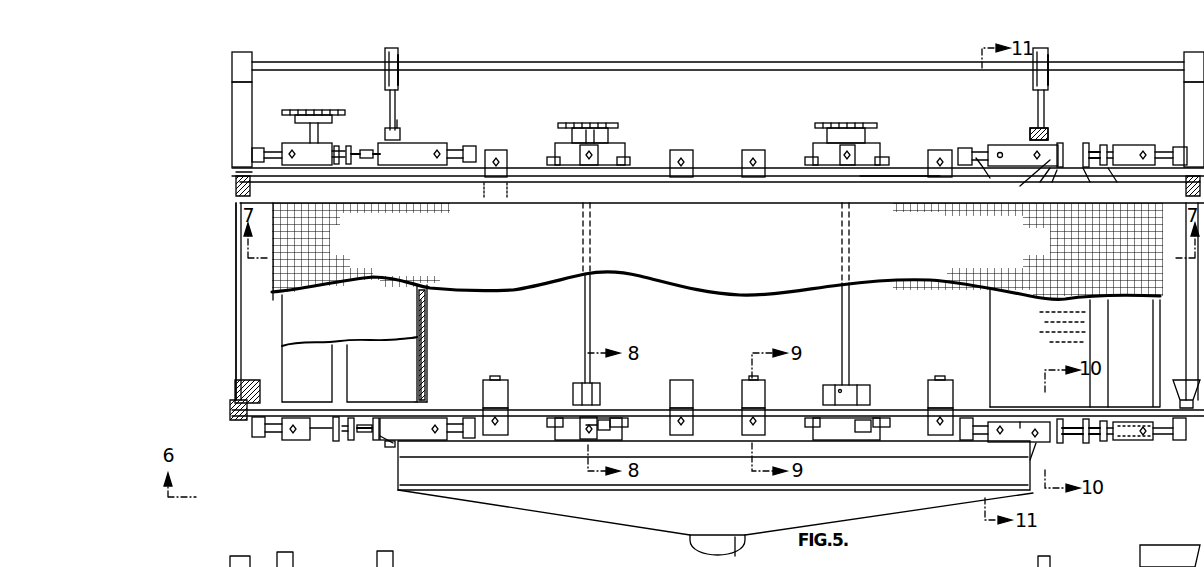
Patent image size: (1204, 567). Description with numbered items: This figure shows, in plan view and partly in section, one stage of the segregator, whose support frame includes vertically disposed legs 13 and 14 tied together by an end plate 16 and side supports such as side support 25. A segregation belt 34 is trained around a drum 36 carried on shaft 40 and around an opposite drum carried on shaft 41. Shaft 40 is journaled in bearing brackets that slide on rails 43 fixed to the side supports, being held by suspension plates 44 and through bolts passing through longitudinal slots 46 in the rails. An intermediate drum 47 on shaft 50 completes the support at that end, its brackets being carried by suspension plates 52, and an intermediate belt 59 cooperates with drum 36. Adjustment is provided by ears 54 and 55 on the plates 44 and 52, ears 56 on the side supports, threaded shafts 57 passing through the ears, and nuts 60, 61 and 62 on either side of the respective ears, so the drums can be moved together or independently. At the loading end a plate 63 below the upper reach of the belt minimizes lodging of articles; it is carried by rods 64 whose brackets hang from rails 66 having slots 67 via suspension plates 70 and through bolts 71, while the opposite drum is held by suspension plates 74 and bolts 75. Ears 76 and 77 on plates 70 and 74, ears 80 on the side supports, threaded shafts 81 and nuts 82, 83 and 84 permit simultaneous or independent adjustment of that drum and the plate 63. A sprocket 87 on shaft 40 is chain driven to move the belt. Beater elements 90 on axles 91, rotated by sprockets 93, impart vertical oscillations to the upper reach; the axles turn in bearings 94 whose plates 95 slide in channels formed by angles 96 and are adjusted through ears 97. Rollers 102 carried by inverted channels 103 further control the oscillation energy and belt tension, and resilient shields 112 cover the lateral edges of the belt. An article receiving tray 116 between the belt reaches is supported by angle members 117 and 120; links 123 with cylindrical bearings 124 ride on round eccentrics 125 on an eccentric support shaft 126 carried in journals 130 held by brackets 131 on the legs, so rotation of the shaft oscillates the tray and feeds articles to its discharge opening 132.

The leg 13 is at (232, 408).
The leg 14 is at (234, 174).
The end plate 16 is at (237, 310).
The side support 25 is at (904, 170).
The belt 34 is at (280, 276).
The drum 36 is at (286, 354).
The shaft 40 is at (310, 130).
The shaft 41 is at (1136, 404).
The rail 43 is at (366, 148).
The suspension plate 44 is at (299, 166).
The longitudinal slot 46 is at (274, 152).
The intermediate drum 47 is at (428, 368).
The shaft 50 is at (426, 408).
The suspension plate 52 is at (420, 150).
The ear 54 is at (350, 441).
The ear 55 is at (378, 440).
The ear 56 is at (340, 148).
The threaded shaft 57 is at (320, 166).
The intermediate belt 59 is at (428, 318).
The nut 60 is at (336, 418).
The nut 61 is at (352, 418).
The nut 62 is at (378, 418).
The plate 63 is at (992, 330).
The rod 64 is at (1010, 406).
The rail 66 is at (976, 150).
The slot 67 is at (1175, 140).
The suspension plate 70 is at (1011, 147).
The through bolt 71 is at (1000, 148).
The suspension plate 74 is at (1140, 143).
The through bolt 75 is at (1160, 147).
The ear 76 is at (1060, 146).
The ear 77 is at (1086, 146).
The ear 80 is at (1104, 146).
The threaded shaft 81 is at (1122, 146).
The nut 82 is at (1063, 418).
The nut 83 is at (1090, 418).
The nut 84 is at (1110, 418).
The sprocket 87 is at (316, 108).
The beater element 90 is at (600, 396).
The axle 91 is at (592, 306).
The sprocket 93 is at (590, 128).
The bearing 94 is at (612, 146).
The plate 95 is at (610, 420).
The angle 96 is at (550, 157).
The ear 97 is at (580, 146).
The roller 102 is at (507, 392).
The inverted channel 103 is at (694, 162).
The shield 112 is at (520, 186).
The article receiving tray 116 is at (672, 520).
The angle member 117 is at (400, 458).
The angle member 120 is at (400, 124).
The link 123 is at (396, 107).
The cylindrical bearing 124 is at (386, 49).
The round eccentric 125 is at (400, 60).
The eccentric support shaft 126 is at (1036, 101).
The journal 130 is at (236, 62).
The bracket 131 is at (236, 104).
The discharge opening 132 is at (740, 546).